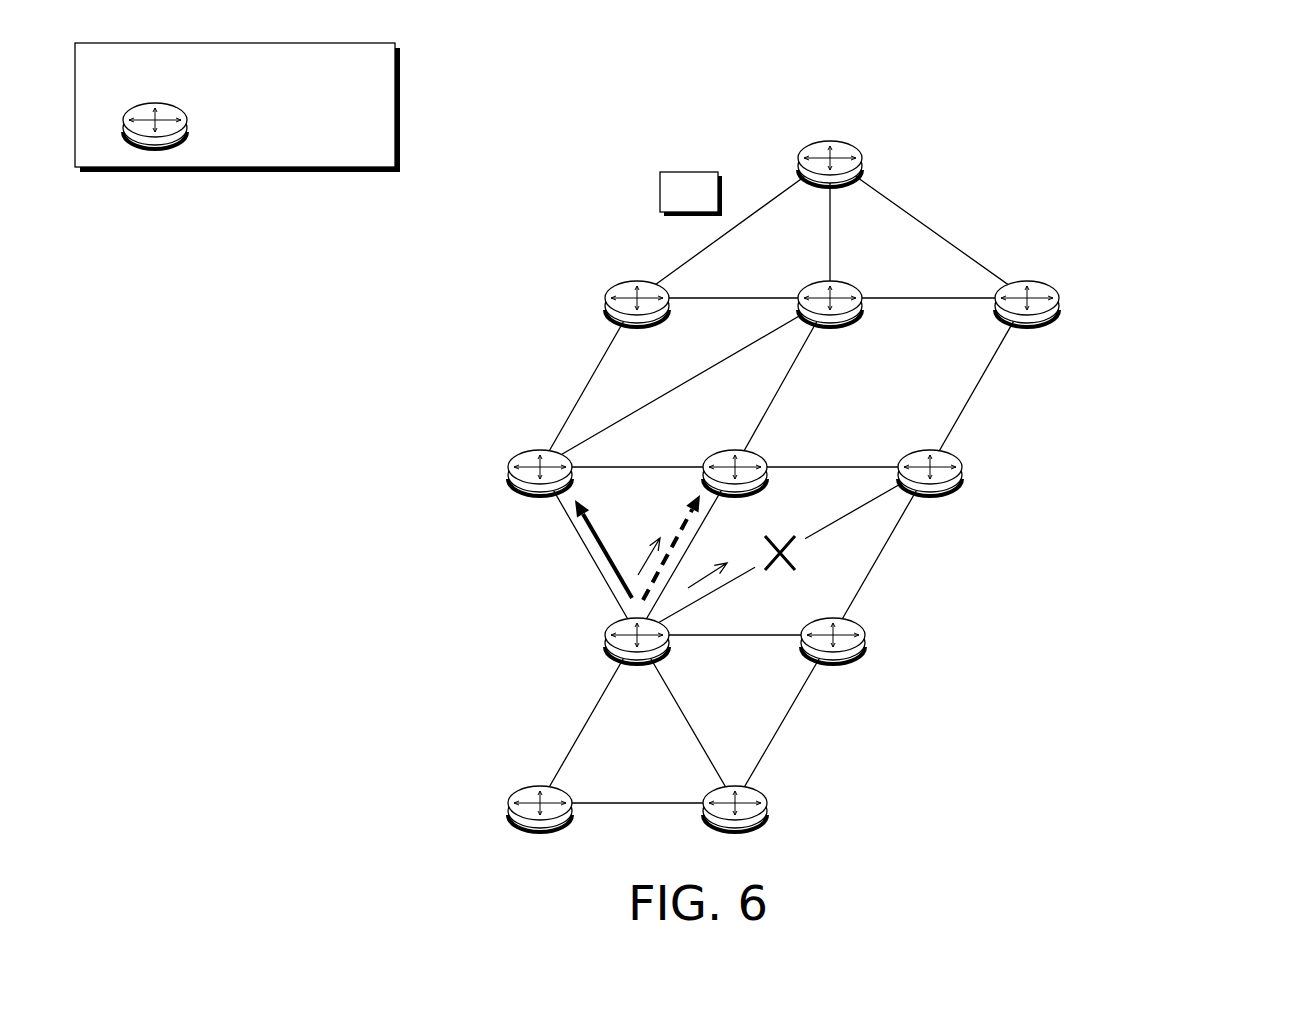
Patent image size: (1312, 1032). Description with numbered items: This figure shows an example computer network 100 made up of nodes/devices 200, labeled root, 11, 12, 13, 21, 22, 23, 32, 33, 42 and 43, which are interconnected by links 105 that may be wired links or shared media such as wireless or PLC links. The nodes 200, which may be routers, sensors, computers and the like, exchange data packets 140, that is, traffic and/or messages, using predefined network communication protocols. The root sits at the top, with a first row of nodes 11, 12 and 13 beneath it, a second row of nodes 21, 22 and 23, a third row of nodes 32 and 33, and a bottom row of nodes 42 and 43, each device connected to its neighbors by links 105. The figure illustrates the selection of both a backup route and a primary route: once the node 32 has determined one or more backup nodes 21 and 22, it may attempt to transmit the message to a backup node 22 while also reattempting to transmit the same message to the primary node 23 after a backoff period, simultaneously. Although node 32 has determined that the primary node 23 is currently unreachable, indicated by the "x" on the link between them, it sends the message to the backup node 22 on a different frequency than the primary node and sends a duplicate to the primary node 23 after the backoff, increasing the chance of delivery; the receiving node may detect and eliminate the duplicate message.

The computer network 100 is at (1225, 97).
The links 105 is at (112, 73).
The nodes/devices 200 is at (234, 126).
The data packets 140 is at (745, 162).
The node 11 is at (637, 322).
The node 12 is at (830, 322).
The node 13 is at (1027, 322).
The backup node 21 is at (540, 490).
The backup node 22 is at (735, 490).
The primary node 23 is at (930, 490).
The node 32 is at (637, 659).
The node 33 is at (833, 659).
The node 42 is at (540, 827).
The node 43 is at (735, 827).